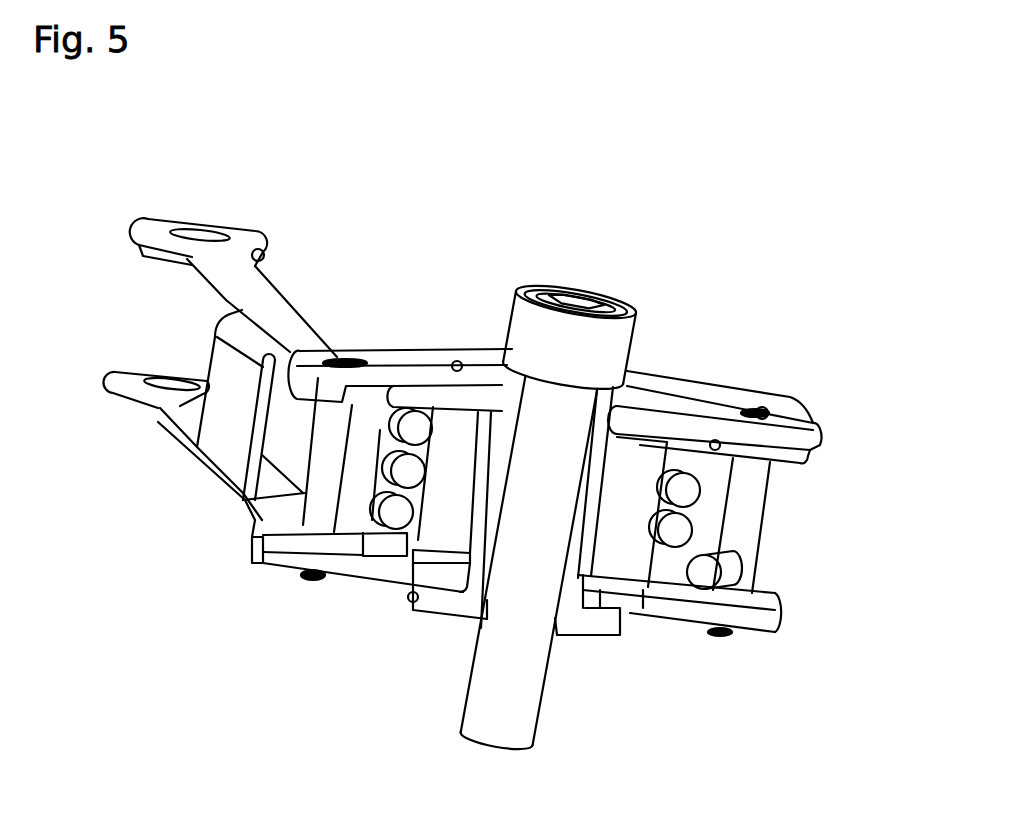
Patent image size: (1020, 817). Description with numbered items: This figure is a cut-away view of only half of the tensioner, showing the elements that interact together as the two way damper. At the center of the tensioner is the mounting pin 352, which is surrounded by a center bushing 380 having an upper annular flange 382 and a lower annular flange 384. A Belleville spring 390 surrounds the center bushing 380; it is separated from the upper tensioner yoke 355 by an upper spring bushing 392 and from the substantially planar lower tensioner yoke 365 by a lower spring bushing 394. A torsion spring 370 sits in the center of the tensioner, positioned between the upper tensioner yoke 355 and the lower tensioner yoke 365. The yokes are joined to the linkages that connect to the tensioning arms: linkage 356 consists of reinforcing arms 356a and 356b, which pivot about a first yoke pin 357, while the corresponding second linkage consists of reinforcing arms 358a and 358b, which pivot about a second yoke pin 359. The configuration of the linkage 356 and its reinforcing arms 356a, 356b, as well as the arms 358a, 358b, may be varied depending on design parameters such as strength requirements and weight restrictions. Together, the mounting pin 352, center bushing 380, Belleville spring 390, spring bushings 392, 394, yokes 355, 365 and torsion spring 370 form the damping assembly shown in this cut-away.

The mounting pin 352 is at (570, 344).
The upper tensioner yoke 355 is at (703, 403).
The linkage 356 is at (202, 349).
The reinforcing arm 356a is at (193, 410).
The reinforcing arm 356b is at (256, 257).
The first yoke pin 357 is at (325, 490).
The reinforcing arm 358a is at (818, 442).
The reinforcing arm 358b is at (775, 610).
The second yoke pin 359 is at (763, 412).
The lower tensioner yoke 365 is at (255, 560).
The torsion spring 370 is at (676, 533).
The center bushing 380 is at (572, 637).
The upper annular flange 382 is at (478, 368).
The lower annular flange 384 is at (430, 597).
The Belleville spring 390 is at (479, 493).
The upper spring bushing 392 is at (460, 410).
The lower spring bushing 394 is at (617, 583).